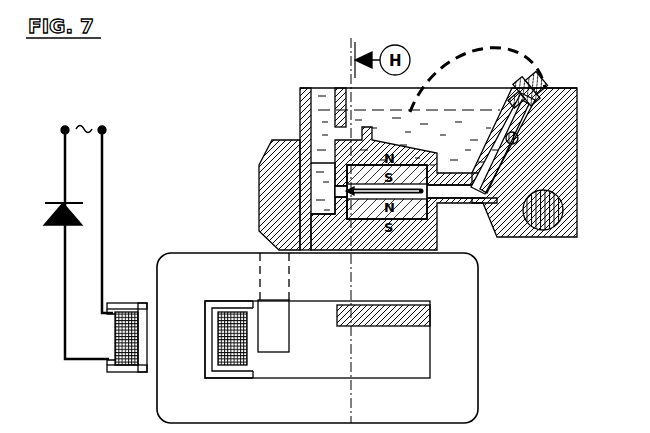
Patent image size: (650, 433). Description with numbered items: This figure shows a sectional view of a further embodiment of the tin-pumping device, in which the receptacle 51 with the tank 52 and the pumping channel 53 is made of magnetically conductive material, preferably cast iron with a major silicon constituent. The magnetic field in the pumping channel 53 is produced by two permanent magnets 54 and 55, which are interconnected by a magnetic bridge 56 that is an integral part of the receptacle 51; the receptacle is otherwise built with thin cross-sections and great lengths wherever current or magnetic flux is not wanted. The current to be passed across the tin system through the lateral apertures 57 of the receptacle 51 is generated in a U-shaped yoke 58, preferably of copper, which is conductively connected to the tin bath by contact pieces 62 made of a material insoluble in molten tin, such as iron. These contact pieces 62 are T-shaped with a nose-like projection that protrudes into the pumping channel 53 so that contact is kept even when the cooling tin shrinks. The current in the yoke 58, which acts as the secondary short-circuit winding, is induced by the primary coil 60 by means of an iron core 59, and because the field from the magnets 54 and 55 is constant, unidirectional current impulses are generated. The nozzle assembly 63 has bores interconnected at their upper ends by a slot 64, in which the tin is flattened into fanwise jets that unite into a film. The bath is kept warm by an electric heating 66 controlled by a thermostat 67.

The receptacle 51 is at (300, 110).
The tank 52 is at (457, 102).
The pumping channel 53 is at (452, 193).
The permanent magnet 54 is at (458, 199).
The permanent magnet 55 is at (466, 204).
The magnetic bridge 56 is at (262, 143).
The lateral apertures 57 is at (322, 212).
The U-shaped yoke 58 is at (424, 319).
The iron core 59 is at (233, 256).
The primary coil 60 is at (128, 306).
The contact pieces 62 is at (338, 190).
The nozzle assembly 63 is at (548, 77).
The slot 64 is at (537, 77).
The electric heating 66 is at (588, 208).
The thermostat 67 is at (508, 131).